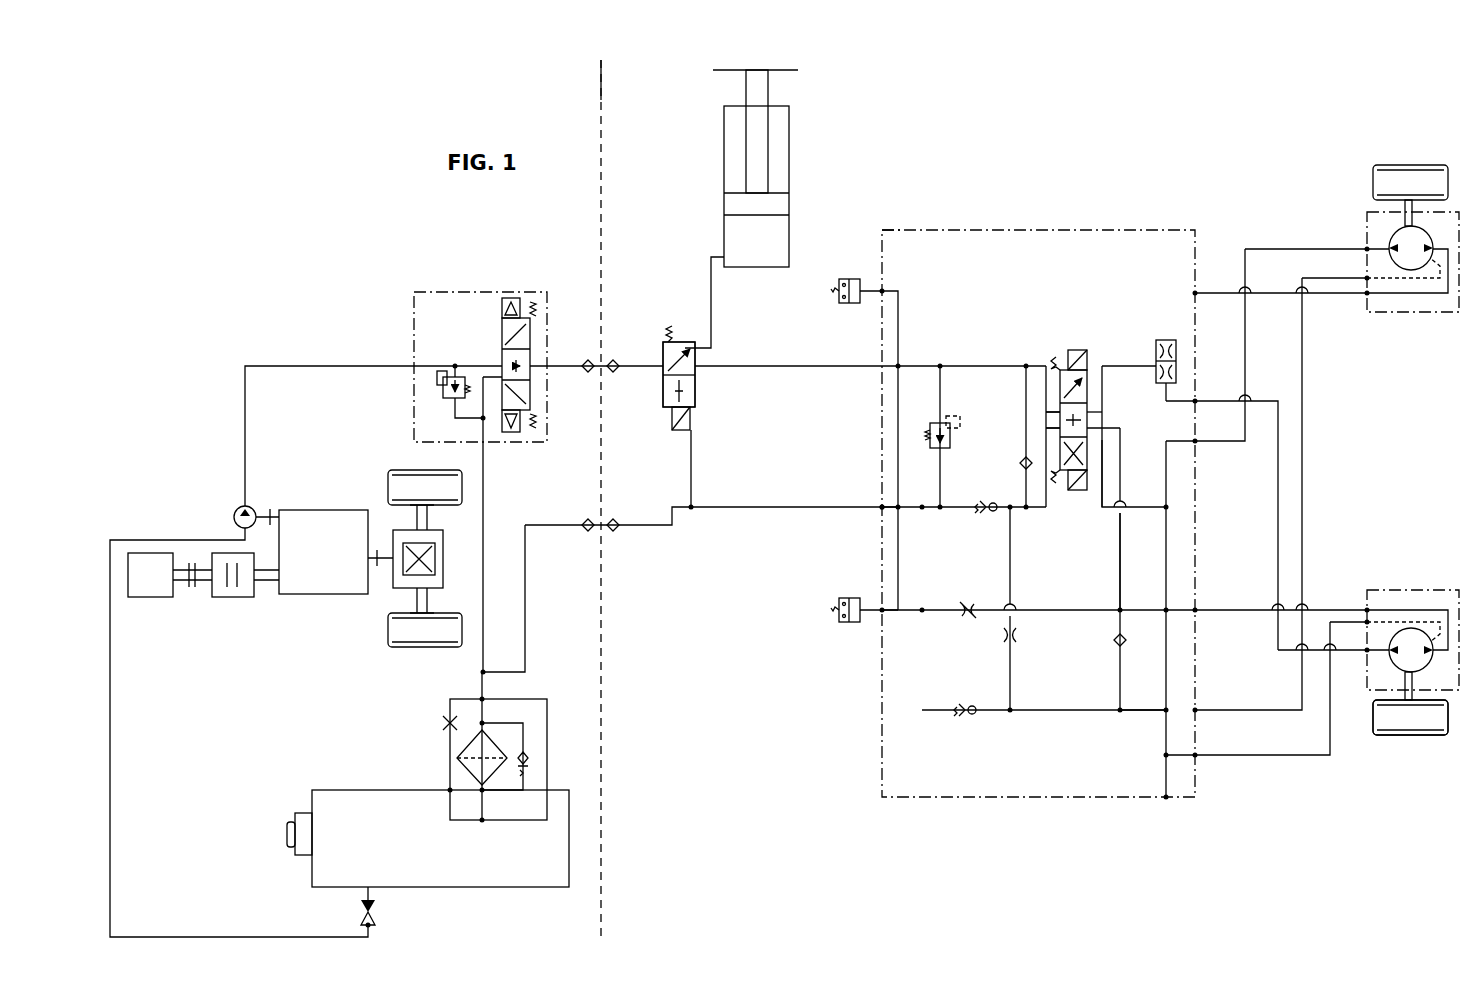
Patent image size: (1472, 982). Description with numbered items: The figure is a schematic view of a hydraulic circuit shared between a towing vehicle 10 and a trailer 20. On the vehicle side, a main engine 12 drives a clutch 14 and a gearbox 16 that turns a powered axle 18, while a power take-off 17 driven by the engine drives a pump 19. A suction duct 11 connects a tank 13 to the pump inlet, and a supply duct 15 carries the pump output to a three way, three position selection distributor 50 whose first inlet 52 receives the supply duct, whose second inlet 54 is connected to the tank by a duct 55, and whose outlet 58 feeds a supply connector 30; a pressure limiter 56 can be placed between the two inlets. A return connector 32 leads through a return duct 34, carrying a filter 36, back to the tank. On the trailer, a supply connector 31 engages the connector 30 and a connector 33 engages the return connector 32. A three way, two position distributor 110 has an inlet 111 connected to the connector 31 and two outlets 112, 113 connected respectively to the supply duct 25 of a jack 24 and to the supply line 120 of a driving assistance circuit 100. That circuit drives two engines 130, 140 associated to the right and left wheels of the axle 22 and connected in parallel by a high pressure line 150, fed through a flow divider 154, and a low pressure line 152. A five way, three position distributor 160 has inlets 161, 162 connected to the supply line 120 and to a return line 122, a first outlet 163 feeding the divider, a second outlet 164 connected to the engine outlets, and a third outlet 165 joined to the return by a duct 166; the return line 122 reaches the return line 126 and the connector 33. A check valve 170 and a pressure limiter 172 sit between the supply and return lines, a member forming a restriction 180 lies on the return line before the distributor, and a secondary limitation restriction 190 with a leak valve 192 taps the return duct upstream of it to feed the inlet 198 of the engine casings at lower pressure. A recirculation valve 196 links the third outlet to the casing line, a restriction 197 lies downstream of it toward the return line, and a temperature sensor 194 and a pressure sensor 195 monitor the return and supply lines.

The towing vehicle 10 is at (362, 190).
The suction duct 11 is at (250, 937).
The main engine 12 is at (148, 605).
The tank 13 is at (468, 862).
The clutch 14 is at (232, 605).
The supply duct 15 is at (330, 357).
The gearbox 16 is at (322, 605).
The power take-off 17 is at (268, 512).
The powered axle 18 is at (372, 483).
The pump 19 is at (234, 512).
The trailer 20 is at (1015, 98).
The axle 22 is at (1410, 772).
The jack 24 is at (802, 181).
The supply duct 25 is at (711, 303).
The supply connector 30 is at (585, 376).
The supply connector 31 is at (618, 376).
The return connector 32 is at (585, 517).
The connector 33 is at (618, 517).
The return duct 34 is at (527, 600).
The filter 36 is at (455, 758).
The selection distributor 50 is at (480, 287).
The first inlet 52 is at (500, 350).
The second inlet 54 is at (470, 374).
The duct 55 is at (486, 510).
The pressure limiter 56 is at (432, 396).
The outlet 58 is at (536, 357).
The driving assistance circuit 100 is at (1042, 215).
The distributor 110 is at (707, 404).
The inlet 111 is at (640, 362).
The outlet 112 is at (711, 343).
The outlet 113 is at (725, 372).
The supply line 120 is at (795, 362).
The return line 122 is at (1030, 510).
The return line 126 is at (752, 506).
The engine 130 is at (1370, 140).
The engine 140 is at (1365, 755).
The high pressure line 150 is at (1154, 352).
The low pressure line 152 is at (1125, 510).
The flow divider 154 is at (1156, 340).
The distributor 160 is at (1064, 350).
The inlet 161 is at (1055, 412).
The inlet 162 is at (1055, 428).
The first outlet 163 is at (1092, 412).
The second outlet 164 is at (1100, 432).
The third outlet 165 is at (1108, 428).
The duct 166 is at (1118, 570).
The check valve 170 is at (1040, 470).
The pressure limiter 172 is at (920, 430).
The member forming a restriction 180 is at (990, 497).
The secondary limitation restriction 190 is at (998, 637).
The leak valve 192 is at (970, 720).
The temperature sensor 194 is at (850, 628).
The pressure sensor 195 is at (850, 272).
The recirculation valve 196 is at (1112, 645).
The restriction 197 is at (968, 598).
The inlet 198 is at (1135, 708).